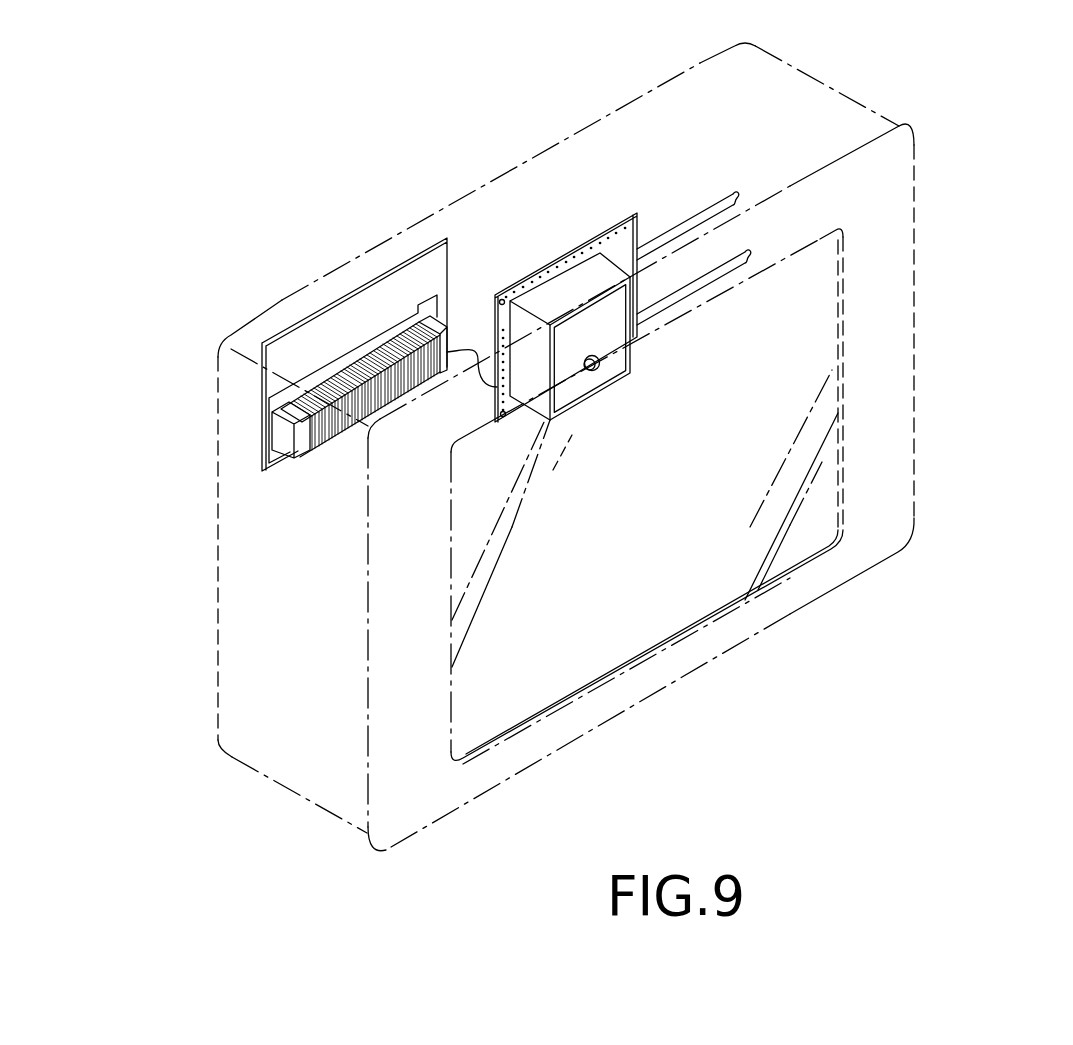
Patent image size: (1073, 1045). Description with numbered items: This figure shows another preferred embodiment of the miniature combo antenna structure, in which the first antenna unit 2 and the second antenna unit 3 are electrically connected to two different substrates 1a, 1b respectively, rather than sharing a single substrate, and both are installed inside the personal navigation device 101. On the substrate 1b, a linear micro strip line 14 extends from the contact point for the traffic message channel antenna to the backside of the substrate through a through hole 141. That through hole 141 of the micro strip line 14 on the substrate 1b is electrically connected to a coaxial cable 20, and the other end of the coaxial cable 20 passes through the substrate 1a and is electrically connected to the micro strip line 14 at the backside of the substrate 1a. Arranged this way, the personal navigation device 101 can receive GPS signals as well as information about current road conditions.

The personal navigation device (PND) 101 is at (875, 338).
The substrate 1a is at (620, 233).
The substrate 1b is at (291, 340).
The first antenna unit 2 is at (583, 407).
The second antenna unit 3 is at (380, 343).
The micro strip line 14 is at (293, 462).
The through hole 141 is at (449, 398).
The coaxial cable 20 is at (480, 345).